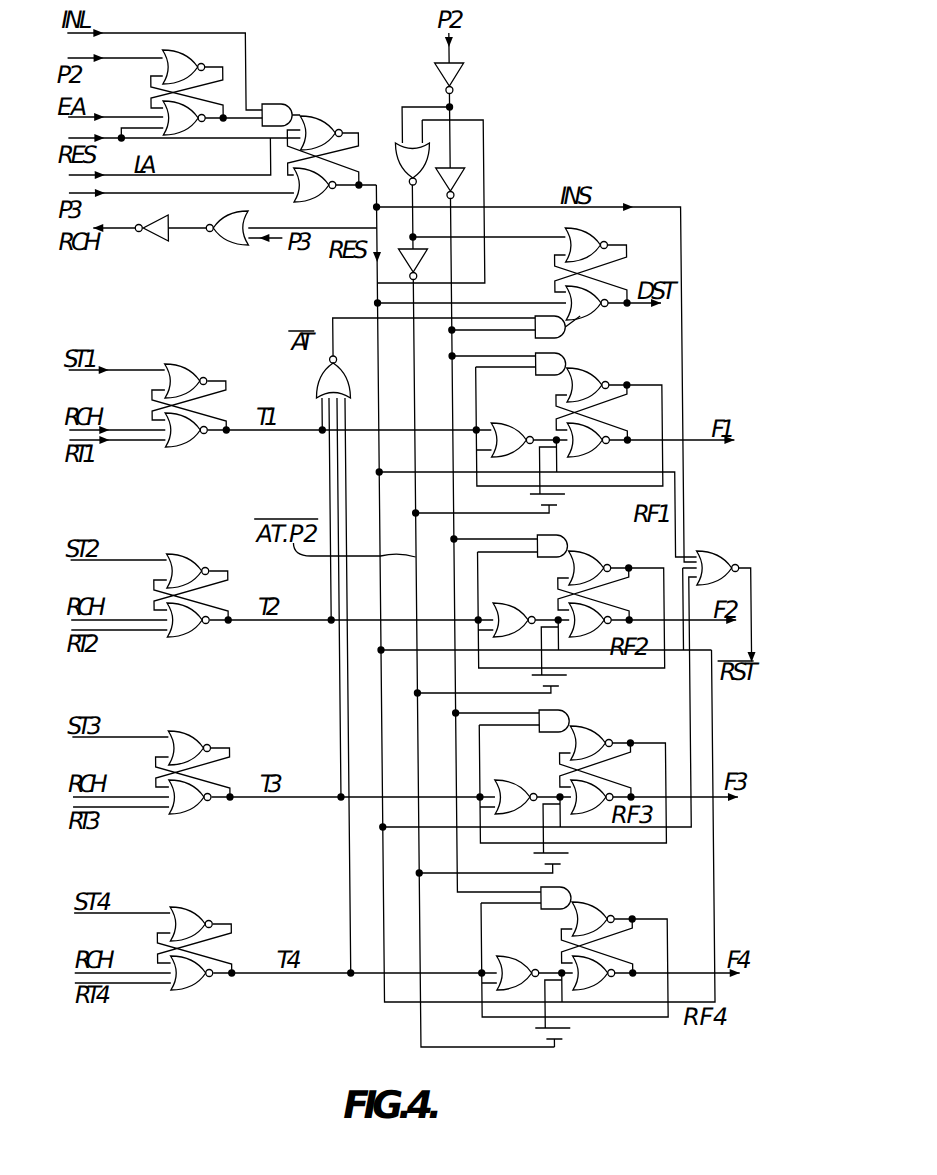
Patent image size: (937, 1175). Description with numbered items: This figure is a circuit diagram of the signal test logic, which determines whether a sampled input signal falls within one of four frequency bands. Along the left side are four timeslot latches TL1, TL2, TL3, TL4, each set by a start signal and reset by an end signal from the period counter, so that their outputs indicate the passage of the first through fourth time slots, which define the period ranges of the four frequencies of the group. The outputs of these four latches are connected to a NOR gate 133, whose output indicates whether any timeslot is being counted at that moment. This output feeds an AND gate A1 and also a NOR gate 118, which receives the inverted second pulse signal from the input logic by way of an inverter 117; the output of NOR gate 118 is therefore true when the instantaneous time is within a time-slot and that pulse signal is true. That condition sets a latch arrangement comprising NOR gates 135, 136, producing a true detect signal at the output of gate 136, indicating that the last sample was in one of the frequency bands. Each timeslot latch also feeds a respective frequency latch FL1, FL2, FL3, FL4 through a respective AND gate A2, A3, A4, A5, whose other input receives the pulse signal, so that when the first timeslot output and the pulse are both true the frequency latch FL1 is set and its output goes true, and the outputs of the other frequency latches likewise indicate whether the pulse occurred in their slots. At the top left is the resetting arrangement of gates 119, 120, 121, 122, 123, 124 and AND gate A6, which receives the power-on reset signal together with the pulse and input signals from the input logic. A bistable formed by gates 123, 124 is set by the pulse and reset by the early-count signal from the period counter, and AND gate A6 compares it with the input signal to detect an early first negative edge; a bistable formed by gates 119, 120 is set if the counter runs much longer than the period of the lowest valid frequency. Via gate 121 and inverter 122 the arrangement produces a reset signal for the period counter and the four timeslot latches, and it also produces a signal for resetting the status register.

The inverter 117 is at (460, 74).
The NOR gate 118 is at (398, 153).
The NOR gate 119 is at (324, 128).
The NOR gate 120 is at (321, 190).
The NOR gate 121 is at (255, 211).
The inverter 122 is at (167, 216).
The NOR gate 123 is at (191, 62).
The NOR gate 124 is at (182, 123).
The NOR gate 133 is at (316, 377).
The NOR gate 135 is at (590, 242).
The NOR gate 136 is at (588, 308).
The AND gate A1 is at (540, 340).
The AND gate A2 is at (540, 377).
The AND gate A3 is at (569, 535).
The AND gate A4 is at (565, 705).
The AND gate A5 is at (570, 886).
The AND gate A6 is at (286, 102).
The timeslot latch TL1 is at (149, 425).
The timeslot latch TL2 is at (151, 615).
The timeslot latch TL3 is at (152, 792).
The timeslot latch TL4 is at (159, 969).
The frequency latch FL1 is at (557, 455).
The frequency latch FL2 is at (558, 599).
The frequency latch FL3 is at (559, 726).
The frequency latch FL4 is at (609, 951).